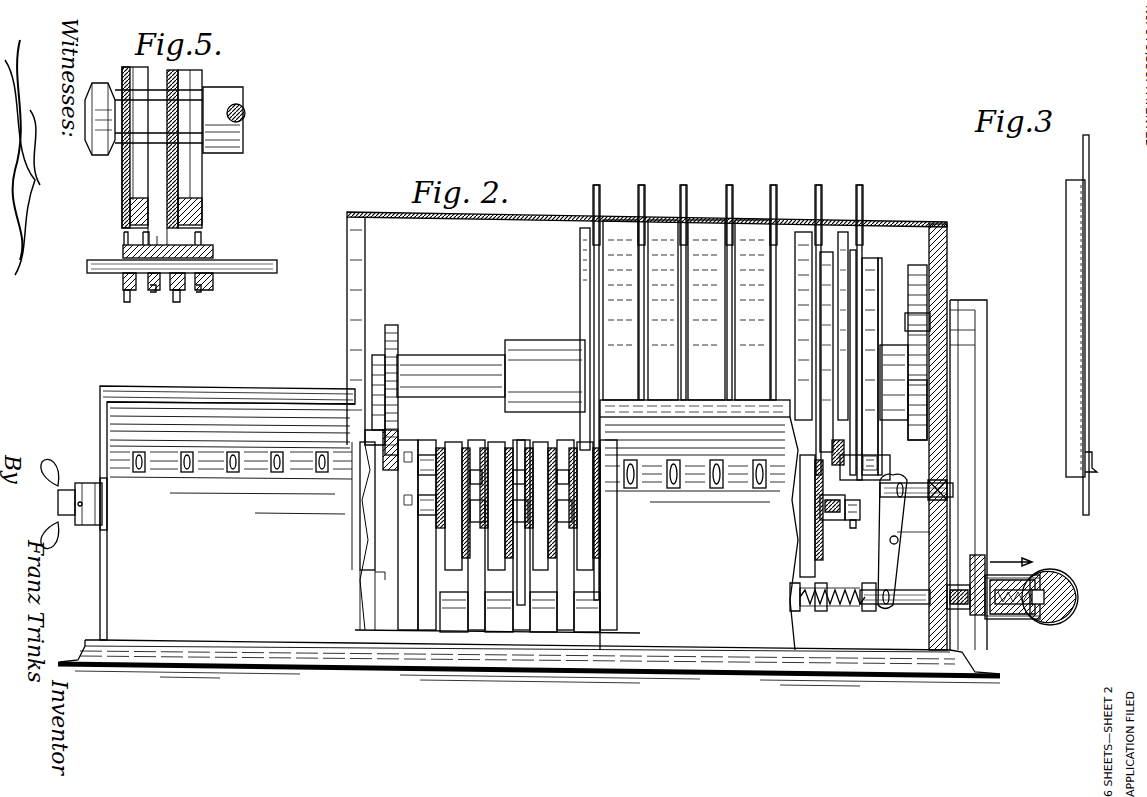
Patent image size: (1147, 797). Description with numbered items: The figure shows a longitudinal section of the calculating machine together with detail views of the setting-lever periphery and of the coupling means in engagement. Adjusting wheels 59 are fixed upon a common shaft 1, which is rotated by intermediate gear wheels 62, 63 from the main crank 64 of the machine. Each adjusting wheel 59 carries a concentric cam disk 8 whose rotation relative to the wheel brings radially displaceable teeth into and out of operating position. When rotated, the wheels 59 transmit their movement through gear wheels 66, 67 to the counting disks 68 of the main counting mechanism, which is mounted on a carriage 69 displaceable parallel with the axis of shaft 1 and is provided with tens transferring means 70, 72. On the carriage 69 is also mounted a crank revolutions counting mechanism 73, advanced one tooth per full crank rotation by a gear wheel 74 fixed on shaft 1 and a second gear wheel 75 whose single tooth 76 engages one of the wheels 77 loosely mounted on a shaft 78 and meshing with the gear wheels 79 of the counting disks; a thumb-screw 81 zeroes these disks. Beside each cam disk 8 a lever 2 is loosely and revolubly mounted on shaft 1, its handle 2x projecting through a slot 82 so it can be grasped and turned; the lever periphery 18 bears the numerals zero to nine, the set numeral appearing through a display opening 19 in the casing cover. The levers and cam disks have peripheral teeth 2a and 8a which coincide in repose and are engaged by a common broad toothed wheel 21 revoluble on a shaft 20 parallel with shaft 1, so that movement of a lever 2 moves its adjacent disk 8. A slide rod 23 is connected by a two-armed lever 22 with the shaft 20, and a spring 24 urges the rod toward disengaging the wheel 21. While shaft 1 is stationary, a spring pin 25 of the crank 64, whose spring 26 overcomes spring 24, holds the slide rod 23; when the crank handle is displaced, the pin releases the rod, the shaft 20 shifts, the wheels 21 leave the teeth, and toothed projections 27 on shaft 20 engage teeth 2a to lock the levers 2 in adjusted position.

In FIG. 5, the common shaft 1 is at (215, 128).
In FIG. 2, the common shaft 1 is at (428, 370).
In FIG. 5, the lever 2 is at (176, 76).
In FIG. 2, the lever 2 is at (856, 318).
In FIG. 2, the handle 2x is at (728, 205).
In FIG. 3, the peripheral teeth 2a is at (1092, 470).
In FIG. 2, the peripheral teeth 2a is at (846, 522).
In FIG. 5, the cam disk 8 is at (178, 165).
In FIG. 2, the cam disk 8 is at (862, 296).
In FIG. 2, the peripheral teeth 8a is at (858, 522).
In FIG. 3, the periphery 18 is at (1066, 305).
In FIG. 2, the periphery 18 is at (846, 235).
In FIG. 2, the display opening 19 is at (600, 232).
In FIG. 5, the shaft 20 is at (238, 275).
In FIG. 2, the shaft 20 is at (948, 485).
In FIG. 5, the toothed wheel 21 is at (182, 301).
In FIG. 2, the toothed wheel 21 is at (853, 530).
In FIG. 2, the two-armed lever 22 is at (895, 570).
In FIG. 2, the slide rod 23 is at (920, 604).
In FIG. 2, the spring 24 is at (835, 607).
In FIG. 2, the spring pin 25 is at (978, 615).
In FIG. 2, the spring 26 is at (1026, 619).
In FIG. 5, the toothed projections 27 is at (204, 238).
In FIG. 2, the toothed projections 27 is at (870, 465).
In FIG. 5, the adjusting wheel 59 is at (192, 192).
In FIG. 2, the adjusting wheel 59 is at (878, 292).
In FIG. 2, the intermediate gear wheel 62 is at (920, 287).
In FIG. 2, the intermediate gear wheel 63 is at (920, 383).
In FIG. 2, the main crank 64 is at (982, 398).
In FIG. 2, the gear wheel 66 is at (512, 424).
In FIG. 2, the gear wheel 67 is at (460, 520).
In FIG. 2, the counting disk 68 is at (452, 568).
In FIG. 2, the carriage 69 is at (452, 636).
In FIG. 2, the tens transferring means 70 is at (520, 600).
In FIG. 2, the tens transferring means 72 is at (876, 282).
In FIG. 2, the crank revolutions counting mechanism 73 is at (367, 536).
In FIG. 2, the gear wheel 74 is at (395, 340).
In FIG. 2, the second gear wheel 75 is at (398, 428).
In FIG. 2, the tooth 76 is at (372, 400).
In FIG. 2, the wheel 77 is at (362, 425).
In FIG. 2, the shaft 78 is at (435, 450).
In FIG. 2, the gear wheel 79 is at (379, 568).
In FIG. 2, the thumb-screw 81 is at (50, 472).
In FIG. 2, the slot 82 is at (645, 240).